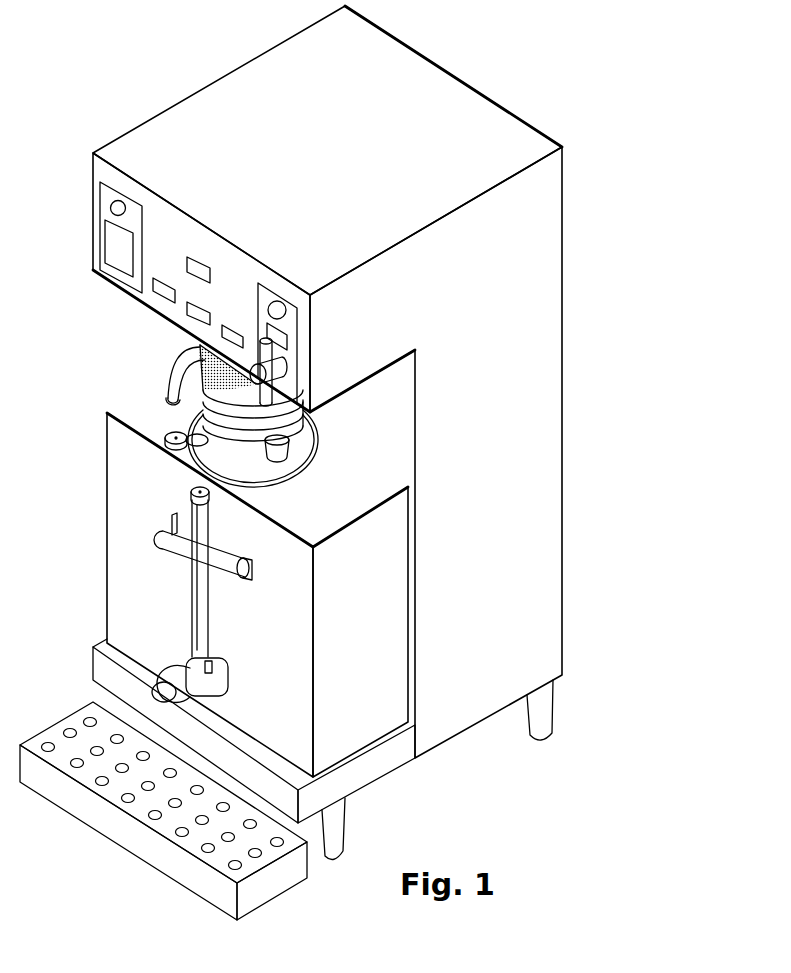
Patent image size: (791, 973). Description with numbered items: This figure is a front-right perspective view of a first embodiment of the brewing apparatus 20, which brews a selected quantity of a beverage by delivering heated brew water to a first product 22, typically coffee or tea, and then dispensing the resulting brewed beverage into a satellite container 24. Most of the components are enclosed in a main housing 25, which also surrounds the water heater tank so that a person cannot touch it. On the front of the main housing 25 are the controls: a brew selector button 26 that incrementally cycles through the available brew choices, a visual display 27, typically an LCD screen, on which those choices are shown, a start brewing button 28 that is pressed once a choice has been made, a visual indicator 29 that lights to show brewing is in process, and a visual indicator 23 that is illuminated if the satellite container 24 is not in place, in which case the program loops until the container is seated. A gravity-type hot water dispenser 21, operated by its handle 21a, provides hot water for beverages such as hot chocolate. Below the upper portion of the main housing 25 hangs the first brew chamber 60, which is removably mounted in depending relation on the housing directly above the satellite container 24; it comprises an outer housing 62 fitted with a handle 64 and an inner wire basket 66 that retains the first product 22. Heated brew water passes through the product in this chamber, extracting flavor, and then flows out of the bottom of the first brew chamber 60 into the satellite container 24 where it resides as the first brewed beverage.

The brewing apparatus 20 is at (652, 163).
The gravity-type hot water dispenser 21 is at (299, 409).
The handle 21a is at (278, 352).
The first product 22 is at (198, 346).
The visual indicator 23 is at (203, 265).
The satellite container 24 is at (120, 572).
The main housing 25 is at (521, 318).
The brew selector button 26 is at (112, 206).
The visual display 27 is at (110, 250).
The start brewing button 28 is at (153, 295).
The visual indicator 29 is at (185, 314).
The first brew chamber 60 is at (218, 387).
The outer housing 62 is at (314, 448).
The handle 64 is at (165, 392).
The inner wire basket 66 is at (199, 362).